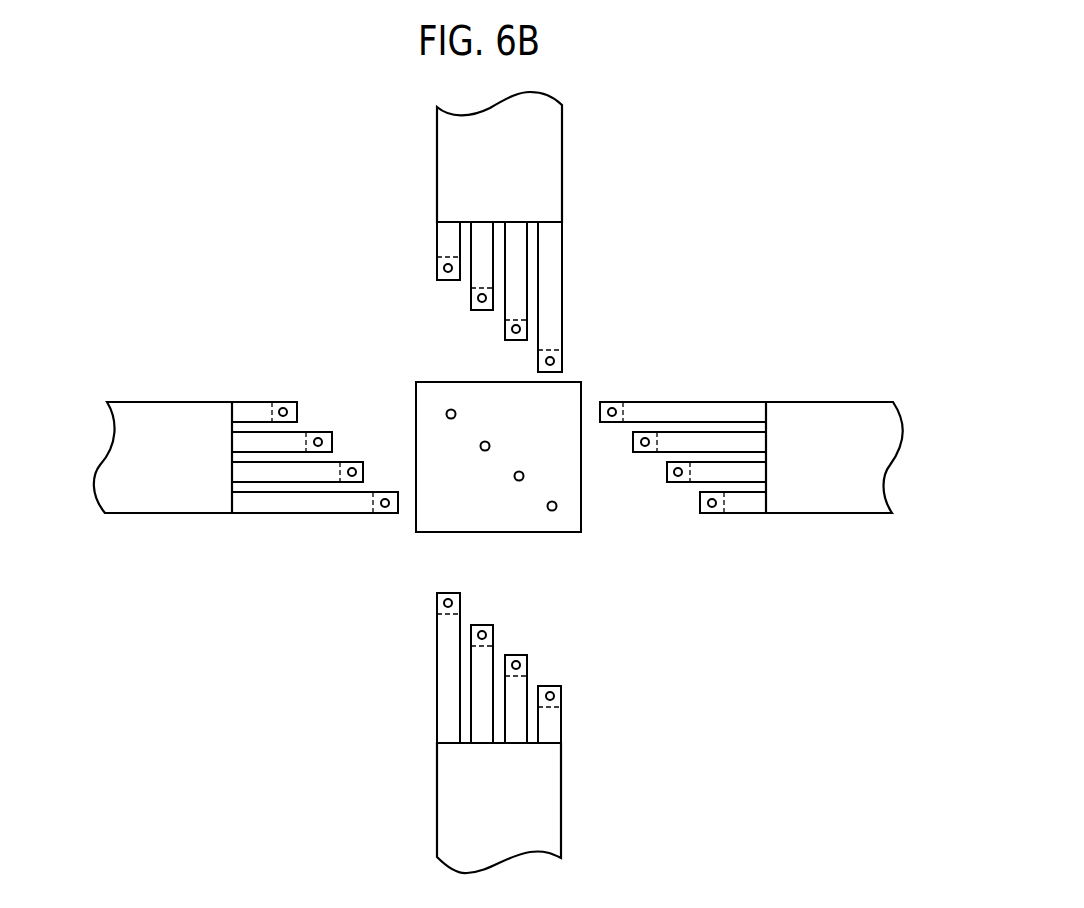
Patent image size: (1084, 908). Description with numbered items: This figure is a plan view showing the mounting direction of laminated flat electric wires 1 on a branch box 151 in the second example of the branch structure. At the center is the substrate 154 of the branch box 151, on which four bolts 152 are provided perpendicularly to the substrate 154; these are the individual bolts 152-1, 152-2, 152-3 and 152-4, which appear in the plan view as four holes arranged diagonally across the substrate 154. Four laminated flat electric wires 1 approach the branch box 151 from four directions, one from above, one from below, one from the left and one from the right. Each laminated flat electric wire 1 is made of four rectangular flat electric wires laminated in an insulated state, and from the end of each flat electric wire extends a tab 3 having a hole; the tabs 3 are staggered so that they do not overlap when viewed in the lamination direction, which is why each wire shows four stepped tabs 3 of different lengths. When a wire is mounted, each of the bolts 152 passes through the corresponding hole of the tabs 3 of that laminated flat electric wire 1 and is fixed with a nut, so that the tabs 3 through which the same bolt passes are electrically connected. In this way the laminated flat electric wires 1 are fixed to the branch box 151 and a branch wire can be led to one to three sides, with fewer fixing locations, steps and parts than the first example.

The laminated flat electric wire 1 is at (489, 169).
The tab 3 is at (451, 282).
The branch box 151 is at (571, 463).
The bolts 152 is at (531, 520).
The bolt 152-1 is at (451, 419).
The bolt 152-2 is at (485, 451).
The bolt 152-3 is at (522, 480).
The bolt 152-4 is at (623, 543).
The substrate 154 is at (567, 402).